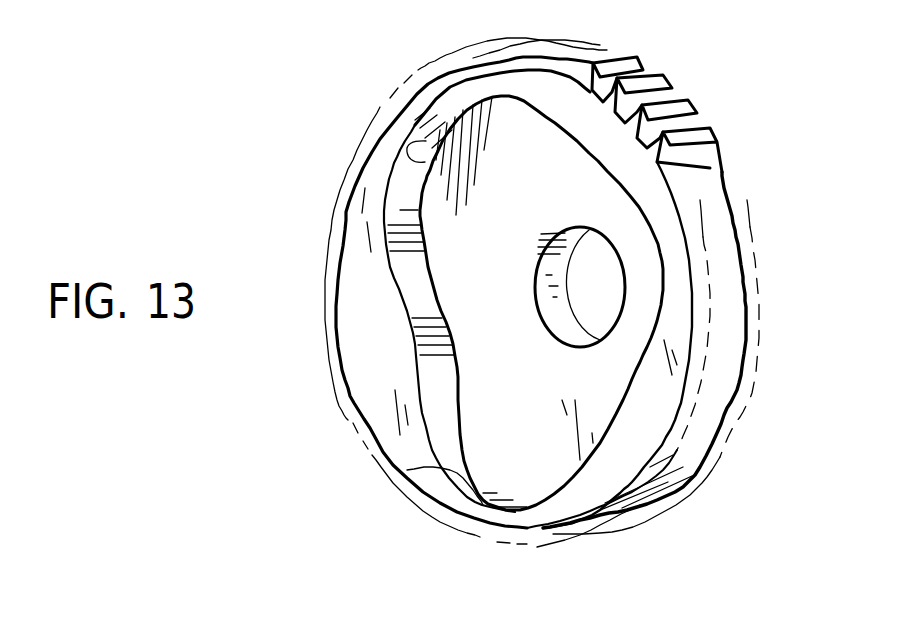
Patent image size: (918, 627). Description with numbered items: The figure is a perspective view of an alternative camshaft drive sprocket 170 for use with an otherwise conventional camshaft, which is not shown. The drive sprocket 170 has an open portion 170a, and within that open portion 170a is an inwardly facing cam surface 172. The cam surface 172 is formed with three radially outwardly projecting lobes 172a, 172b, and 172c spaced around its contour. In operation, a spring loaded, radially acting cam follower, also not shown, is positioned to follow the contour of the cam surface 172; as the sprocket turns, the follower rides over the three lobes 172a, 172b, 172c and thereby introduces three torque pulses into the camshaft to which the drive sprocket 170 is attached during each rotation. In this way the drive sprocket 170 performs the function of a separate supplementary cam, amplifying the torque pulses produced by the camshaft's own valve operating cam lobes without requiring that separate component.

The drive sprocket 170 is at (725, 316).
The open portion 170a is at (576, 203).
The cam surface 172 is at (437, 433).
The lobe 172a is at (407, 472).
The lobe 172b is at (609, 279).
The lobe 172c is at (412, 150).